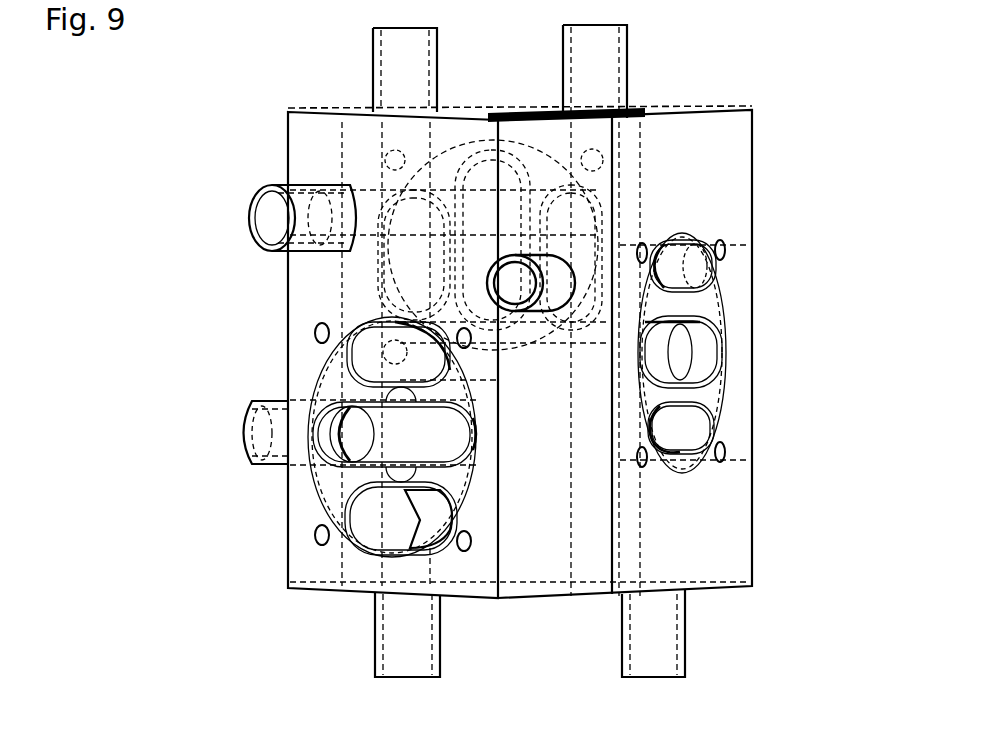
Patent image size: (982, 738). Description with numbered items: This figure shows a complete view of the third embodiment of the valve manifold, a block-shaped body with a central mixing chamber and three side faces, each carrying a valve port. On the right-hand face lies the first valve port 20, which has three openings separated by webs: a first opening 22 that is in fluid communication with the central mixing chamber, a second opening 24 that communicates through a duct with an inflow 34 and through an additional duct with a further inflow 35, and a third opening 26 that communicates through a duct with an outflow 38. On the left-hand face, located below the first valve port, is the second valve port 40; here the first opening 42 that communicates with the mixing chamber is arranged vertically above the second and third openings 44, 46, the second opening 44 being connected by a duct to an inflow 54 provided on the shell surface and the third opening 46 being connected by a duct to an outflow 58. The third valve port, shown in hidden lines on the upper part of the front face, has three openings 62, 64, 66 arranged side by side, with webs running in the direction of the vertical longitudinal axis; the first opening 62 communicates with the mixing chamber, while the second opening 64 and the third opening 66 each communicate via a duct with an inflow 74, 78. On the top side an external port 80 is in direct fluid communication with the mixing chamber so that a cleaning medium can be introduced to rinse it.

The first valve port 20 is at (762, 392).
The first opening 22 is at (675, 348).
The second opening 24 is at (680, 286).
The third opening 26 is at (668, 432).
The inflow 34 is at (514, 292).
The further inflow 35 is at (735, 264).
The outflow 38 is at (660, 648).
The second valve port 40 is at (282, 545).
The first opening 42 is at (372, 356).
The second opening 44 is at (385, 440).
The third opening 46 is at (385, 508).
The inflow 54 is at (262, 436).
The outflow 58 is at (398, 650).
The first opening 62 is at (485, 182).
The second opening 64 is at (575, 212).
The third opening 66 is at (395, 262).
The inflow 74 is at (588, 60).
The inflow 78 is at (270, 218).
The external port 80 is at (400, 68).